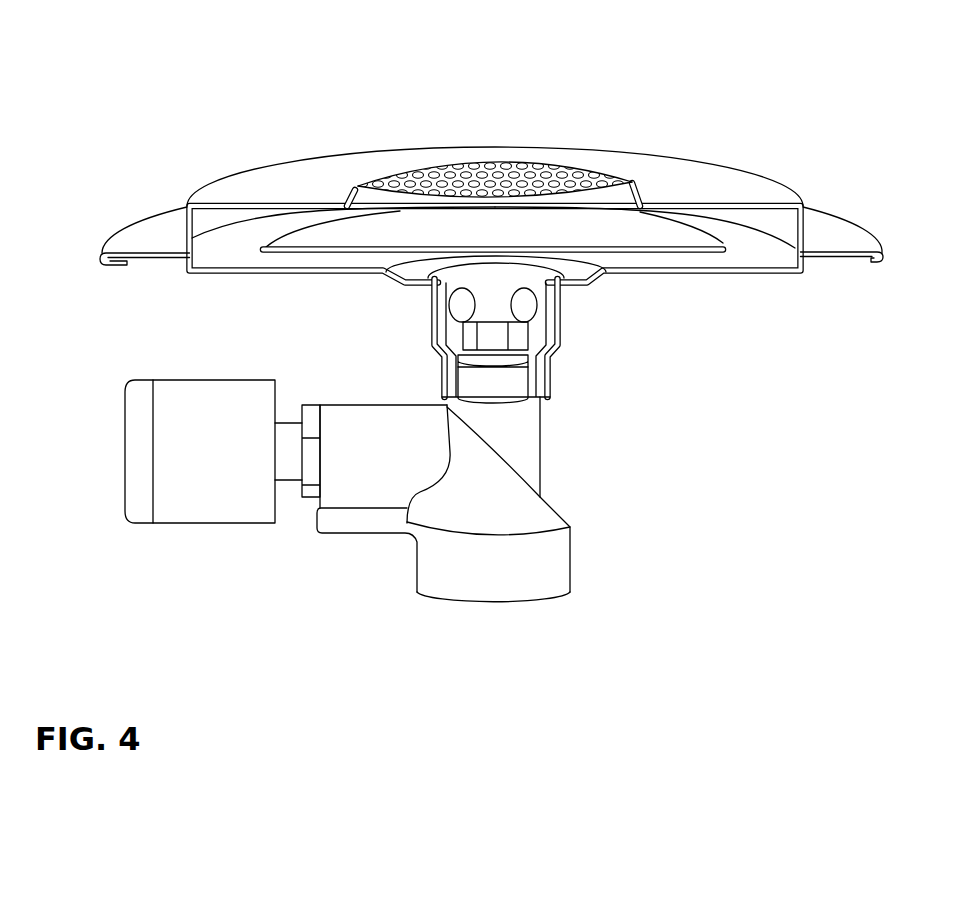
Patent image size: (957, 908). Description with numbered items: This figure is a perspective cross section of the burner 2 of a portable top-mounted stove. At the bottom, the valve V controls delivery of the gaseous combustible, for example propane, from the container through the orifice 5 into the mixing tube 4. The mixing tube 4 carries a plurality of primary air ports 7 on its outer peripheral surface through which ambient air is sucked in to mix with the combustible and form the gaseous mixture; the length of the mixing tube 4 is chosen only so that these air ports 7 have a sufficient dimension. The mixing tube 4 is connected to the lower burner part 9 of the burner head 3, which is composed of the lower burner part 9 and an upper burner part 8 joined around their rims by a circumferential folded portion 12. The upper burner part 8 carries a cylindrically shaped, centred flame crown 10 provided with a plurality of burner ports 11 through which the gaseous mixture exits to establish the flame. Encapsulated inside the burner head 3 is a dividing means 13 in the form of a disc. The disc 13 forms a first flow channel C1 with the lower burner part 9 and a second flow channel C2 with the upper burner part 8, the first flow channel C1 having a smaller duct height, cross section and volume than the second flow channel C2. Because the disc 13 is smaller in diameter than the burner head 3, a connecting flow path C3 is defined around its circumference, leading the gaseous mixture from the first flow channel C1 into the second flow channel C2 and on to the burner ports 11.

The burner 2 is at (527, 110).
The burner head 3 is at (677, 180).
The mixing tube 4 is at (550, 323).
The orifice 5 is at (517, 343).
The primary air ports 7 is at (457, 308).
The upper burner part 8 is at (706, 187).
The lower burner part 9 is at (673, 273).
The flame crown 10 is at (348, 203).
The burner ports 11 is at (450, 162).
The circumferential folded portion 12 is at (838, 260).
The dividing means 13 is at (679, 244).
The first flow channel C1 is at (636, 261).
The second flow channel C2 is at (328, 239).
The connecting flow path C3 is at (229, 227).
The valve V is at (190, 413).